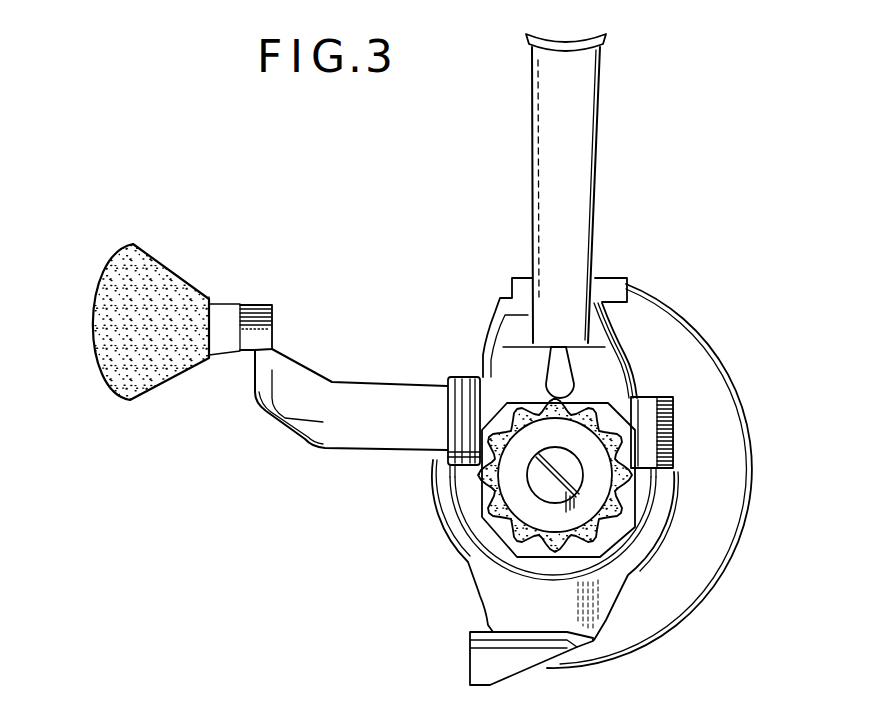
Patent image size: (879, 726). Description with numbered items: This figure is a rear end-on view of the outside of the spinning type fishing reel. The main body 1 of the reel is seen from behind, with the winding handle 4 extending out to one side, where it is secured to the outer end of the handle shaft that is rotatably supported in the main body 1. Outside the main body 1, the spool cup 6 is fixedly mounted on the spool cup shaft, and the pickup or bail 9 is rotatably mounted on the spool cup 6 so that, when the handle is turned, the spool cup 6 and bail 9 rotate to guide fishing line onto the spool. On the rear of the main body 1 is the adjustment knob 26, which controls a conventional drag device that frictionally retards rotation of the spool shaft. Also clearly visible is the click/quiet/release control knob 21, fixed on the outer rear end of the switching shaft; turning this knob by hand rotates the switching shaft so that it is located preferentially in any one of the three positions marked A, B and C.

The main body 1 is at (493, 382).
The winding handle 4 is at (190, 300).
The spool cup 6 is at (476, 557).
The bail 9 is at (690, 618).
The click/quiet/release control knob 21 is at (531, 369).
The adjustment knob 26 is at (480, 493).